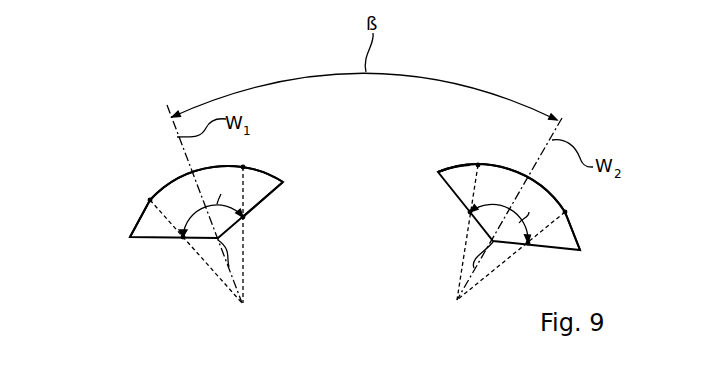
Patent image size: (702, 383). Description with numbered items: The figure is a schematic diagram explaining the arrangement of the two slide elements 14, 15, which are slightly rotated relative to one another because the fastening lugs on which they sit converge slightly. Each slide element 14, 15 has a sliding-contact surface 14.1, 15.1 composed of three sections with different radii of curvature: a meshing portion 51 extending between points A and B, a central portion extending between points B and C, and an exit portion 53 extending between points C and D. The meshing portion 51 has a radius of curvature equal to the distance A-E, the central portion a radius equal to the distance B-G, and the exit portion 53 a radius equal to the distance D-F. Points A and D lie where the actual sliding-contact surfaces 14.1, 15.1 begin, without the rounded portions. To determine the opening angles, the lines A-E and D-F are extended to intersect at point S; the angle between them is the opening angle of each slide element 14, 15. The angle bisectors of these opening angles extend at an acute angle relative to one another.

The slide element 14 is at (171, 228).
The sliding-contact surface 14.1 is at (167, 187).
The slide element 15 is at (552, 222).
The sliding-contact surface 15.1 is at (502, 166).
The meshing portion 51 is at (143, 210).
The exit portion 53 is at (263, 168).